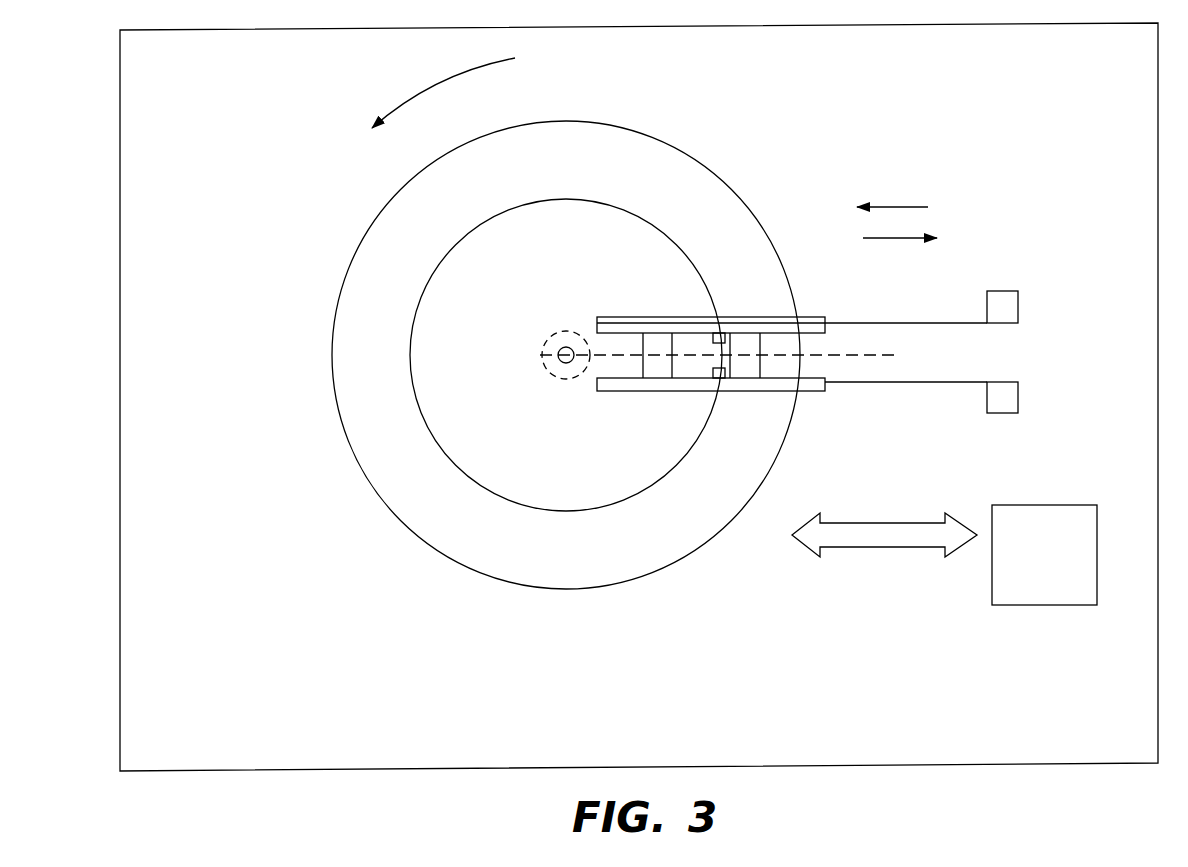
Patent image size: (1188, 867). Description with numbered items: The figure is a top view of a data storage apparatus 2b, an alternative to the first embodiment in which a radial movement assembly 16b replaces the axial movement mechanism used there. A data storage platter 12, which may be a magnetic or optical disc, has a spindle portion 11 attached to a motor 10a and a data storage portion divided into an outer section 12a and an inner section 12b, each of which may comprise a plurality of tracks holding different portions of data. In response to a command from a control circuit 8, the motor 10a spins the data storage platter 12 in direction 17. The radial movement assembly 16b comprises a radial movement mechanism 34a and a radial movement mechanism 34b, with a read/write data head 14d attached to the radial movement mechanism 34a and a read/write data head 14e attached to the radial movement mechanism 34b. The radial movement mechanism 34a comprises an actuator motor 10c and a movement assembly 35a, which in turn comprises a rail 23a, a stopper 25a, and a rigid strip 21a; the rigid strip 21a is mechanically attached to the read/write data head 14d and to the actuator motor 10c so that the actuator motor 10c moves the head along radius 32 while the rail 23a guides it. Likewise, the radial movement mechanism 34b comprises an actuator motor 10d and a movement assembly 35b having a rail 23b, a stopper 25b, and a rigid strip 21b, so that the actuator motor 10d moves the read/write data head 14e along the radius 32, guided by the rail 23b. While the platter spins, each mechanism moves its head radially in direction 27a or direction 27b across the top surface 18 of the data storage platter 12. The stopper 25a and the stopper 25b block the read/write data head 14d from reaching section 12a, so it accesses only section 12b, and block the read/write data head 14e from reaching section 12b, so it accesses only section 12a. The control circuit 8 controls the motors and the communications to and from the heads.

The data storage apparatus 2b is at (107, 125).
The control circuit 8 is at (1044, 555).
The motor 10a is at (545, 341).
The actuator motor 10c is at (1000, 291).
The actuator motor 10d is at (1000, 413).
The spindle portion 11 is at (542, 357).
The data storage platter 12 is at (705, 165).
The section 12a is at (564, 160).
The section 12b is at (566, 355).
The read/write data head 14d is at (657, 373).
The read/write data head 14e is at (752, 370).
The radial movement assembly 16b is at (805, 240).
The direction 17 is at (408, 100).
The top surface 18 is at (365, 357).
The rigid strip 21a is at (952, 323).
The rigid strip 21b is at (952, 382).
The rail 23a is at (776, 317).
The rail 23b is at (783, 391).
The stopper 25a is at (720, 333).
The stopper 25b is at (720, 378).
The direction 27a is at (903, 207).
The direction 27b is at (892, 240).
The radius 32 is at (850, 355).
The radial movement mechanism 34a is at (1013, 230).
The radial movement mechanism 34b is at (1007, 453).
The movement assembly 35a is at (835, 305).
The movement assembly 35b is at (832, 392).